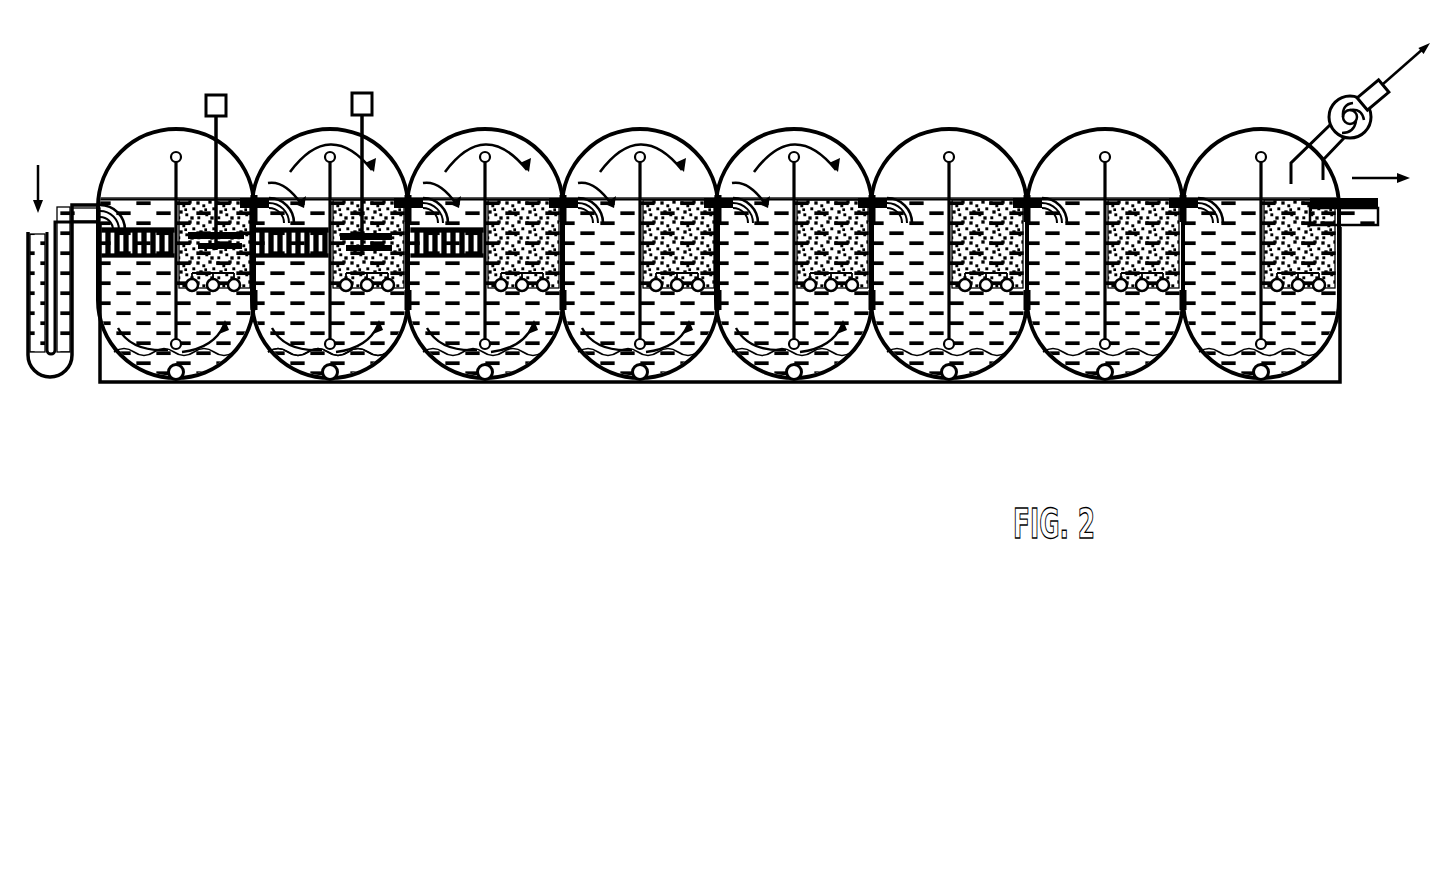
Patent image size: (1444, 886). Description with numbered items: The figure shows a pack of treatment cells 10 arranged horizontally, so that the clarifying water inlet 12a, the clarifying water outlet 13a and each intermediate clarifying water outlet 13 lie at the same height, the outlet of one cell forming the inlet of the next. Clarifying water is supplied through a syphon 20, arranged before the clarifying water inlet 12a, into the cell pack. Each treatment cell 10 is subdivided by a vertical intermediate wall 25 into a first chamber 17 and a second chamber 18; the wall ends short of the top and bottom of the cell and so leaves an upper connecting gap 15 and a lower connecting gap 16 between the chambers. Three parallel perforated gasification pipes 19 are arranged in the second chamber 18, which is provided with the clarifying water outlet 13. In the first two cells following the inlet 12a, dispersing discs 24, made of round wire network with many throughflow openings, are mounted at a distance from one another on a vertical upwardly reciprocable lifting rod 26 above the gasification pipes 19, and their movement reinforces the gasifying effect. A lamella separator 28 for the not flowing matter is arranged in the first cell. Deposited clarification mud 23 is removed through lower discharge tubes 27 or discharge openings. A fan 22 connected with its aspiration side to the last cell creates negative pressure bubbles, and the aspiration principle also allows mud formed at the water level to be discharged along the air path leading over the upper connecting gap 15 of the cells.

The treatment cell 10 is at (803, 122).
The clarifying water inlet 12a is at (83, 203).
The intermediate clarifying water outlet 13 is at (428, 198).
The clarifying water outlet 13a is at (1358, 228).
The upper connecting gap 15 is at (490, 130).
The lower connecting gap 16 is at (503, 380).
The first chamber 17 is at (148, 152).
The second chamber 18 is at (200, 153).
The perforated gasification pipes 19 is at (657, 292).
The syphon 20 is at (57, 372).
The fan 22 is at (1337, 107).
The clarification mud 23 is at (352, 368).
The dispersing discs 24 is at (252, 268).
The vertical intermediate wall 25 is at (174, 185).
The lifting rod 26 is at (222, 132).
The lower discharge tubes 27 is at (328, 382).
The lamella separator 28 is at (307, 215).